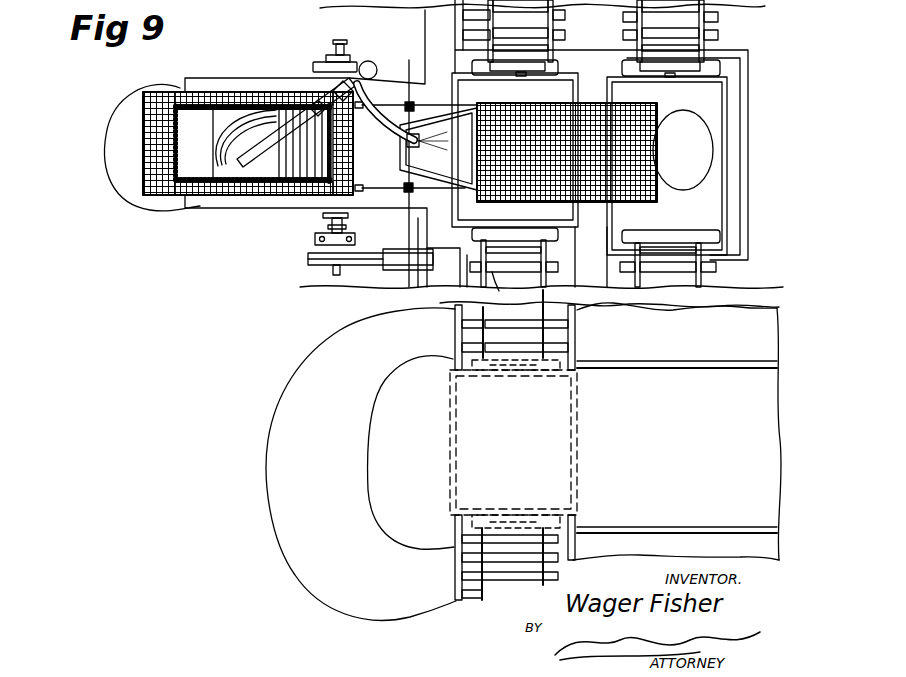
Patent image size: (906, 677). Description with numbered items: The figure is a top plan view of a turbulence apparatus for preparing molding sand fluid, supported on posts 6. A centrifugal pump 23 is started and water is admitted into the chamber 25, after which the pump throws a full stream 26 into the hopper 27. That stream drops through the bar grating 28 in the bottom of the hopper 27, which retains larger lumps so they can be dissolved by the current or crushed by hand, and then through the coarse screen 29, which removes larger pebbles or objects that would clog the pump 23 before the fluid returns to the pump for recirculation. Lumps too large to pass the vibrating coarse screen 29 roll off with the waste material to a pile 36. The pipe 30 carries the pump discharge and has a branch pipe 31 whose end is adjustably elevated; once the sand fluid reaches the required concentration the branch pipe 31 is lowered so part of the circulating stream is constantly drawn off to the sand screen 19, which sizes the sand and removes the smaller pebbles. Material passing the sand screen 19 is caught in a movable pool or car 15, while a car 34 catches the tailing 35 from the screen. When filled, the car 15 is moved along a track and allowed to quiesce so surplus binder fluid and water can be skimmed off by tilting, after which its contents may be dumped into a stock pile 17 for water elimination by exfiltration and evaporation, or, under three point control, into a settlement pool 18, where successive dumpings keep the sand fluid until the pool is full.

The support posts 6 is at (487, 317).
The movable pool or car 15 is at (563, 89).
The stock pile 17 is at (357, 474).
The settlement pool 18 is at (677, 431).
The sand screen 19 is at (633, 122).
The centrifugal pump 23 is at (319, 60).
The chamber 25 is at (260, 90).
The stream 26 is at (222, 165).
The hopper 27 is at (259, 183).
The bar grating 28 is at (305, 170).
The coarse screen 29 is at (147, 196).
The pipe 30 is at (366, 64).
The branch pipe 31 is at (388, 133).
The car 34 is at (718, 170).
The tailing 35 is at (686, 128).
The pile 36 is at (115, 158).